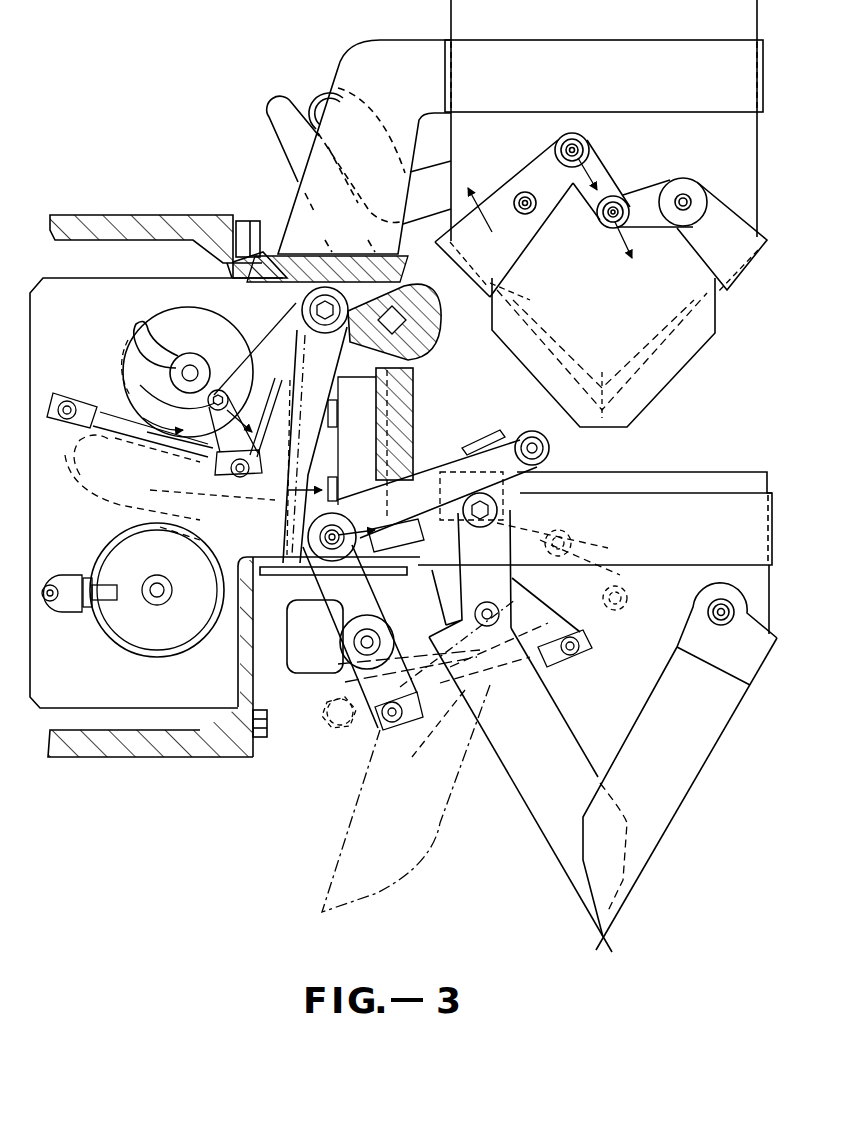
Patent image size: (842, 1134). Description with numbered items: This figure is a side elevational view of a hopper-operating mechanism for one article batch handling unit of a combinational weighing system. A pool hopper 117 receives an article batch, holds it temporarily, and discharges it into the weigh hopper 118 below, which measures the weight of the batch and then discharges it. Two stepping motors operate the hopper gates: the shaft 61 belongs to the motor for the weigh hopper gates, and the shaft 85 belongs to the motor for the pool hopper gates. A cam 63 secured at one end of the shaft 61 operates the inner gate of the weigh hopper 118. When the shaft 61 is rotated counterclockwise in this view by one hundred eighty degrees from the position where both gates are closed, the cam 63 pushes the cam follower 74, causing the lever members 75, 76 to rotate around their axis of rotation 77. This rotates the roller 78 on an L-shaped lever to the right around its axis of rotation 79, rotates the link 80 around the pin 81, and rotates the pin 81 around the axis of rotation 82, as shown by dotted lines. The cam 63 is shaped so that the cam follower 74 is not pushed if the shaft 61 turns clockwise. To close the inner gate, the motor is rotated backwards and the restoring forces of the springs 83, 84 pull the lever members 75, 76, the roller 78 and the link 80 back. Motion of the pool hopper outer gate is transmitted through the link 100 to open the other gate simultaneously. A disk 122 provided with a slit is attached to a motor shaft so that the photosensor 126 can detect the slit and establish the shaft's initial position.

The shaft 61 is at (170, 340).
The cam 63 is at (137, 378).
The cam follower 74 is at (218, 390).
The lever member 75 is at (268, 330).
The lever member 76 is at (313, 398).
The axis of rotation 77 is at (322, 288).
The roller 78 is at (313, 548).
The axis of rotation 79 is at (340, 667).
The link 80 is at (530, 487).
The pin 81 is at (500, 508).
The axis of rotation 82 is at (505, 614).
The spring 83 is at (78, 444).
The spring 84 is at (406, 798).
The shaft 85 is at (150, 598).
The link 100 is at (600, 180).
The pool hopper 117 is at (697, 366).
The weigh hopper 118 is at (728, 745).
The disk 122 is at (163, 642).
The photosensor 126 is at (97, 610).